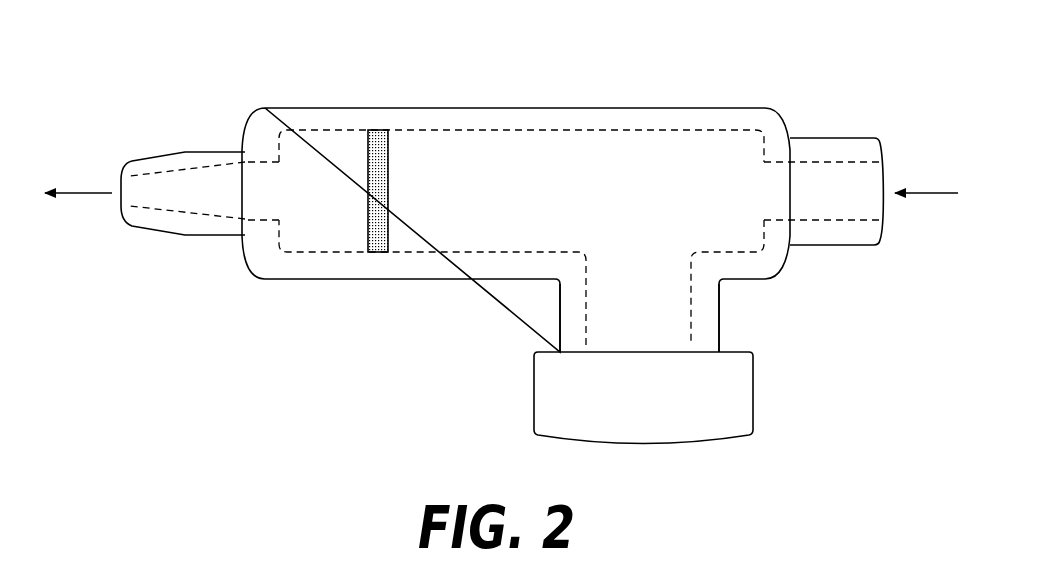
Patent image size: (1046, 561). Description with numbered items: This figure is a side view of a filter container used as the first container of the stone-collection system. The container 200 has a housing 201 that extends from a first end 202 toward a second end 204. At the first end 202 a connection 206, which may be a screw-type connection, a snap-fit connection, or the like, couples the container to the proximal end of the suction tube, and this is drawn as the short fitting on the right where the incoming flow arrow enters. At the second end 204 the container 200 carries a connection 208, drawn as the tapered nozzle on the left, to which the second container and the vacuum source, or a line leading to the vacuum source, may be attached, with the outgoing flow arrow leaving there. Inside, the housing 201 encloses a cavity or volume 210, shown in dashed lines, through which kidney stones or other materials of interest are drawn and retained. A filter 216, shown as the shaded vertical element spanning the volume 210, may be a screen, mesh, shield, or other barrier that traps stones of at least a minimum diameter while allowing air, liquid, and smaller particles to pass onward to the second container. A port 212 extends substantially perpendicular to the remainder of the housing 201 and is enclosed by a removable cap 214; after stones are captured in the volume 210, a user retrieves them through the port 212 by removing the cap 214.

The container 200 is at (96, 46).
The housing 201 is at (583, 108).
The first end 202 is at (838, 93).
The second end 204 is at (153, 150).
The connection 206 is at (843, 246).
The connection 208 is at (163, 231).
The volume 210 is at (512, 155).
The port 212 is at (558, 318).
The removable cap 214 is at (588, 446).
The filter 216 is at (368, 238).